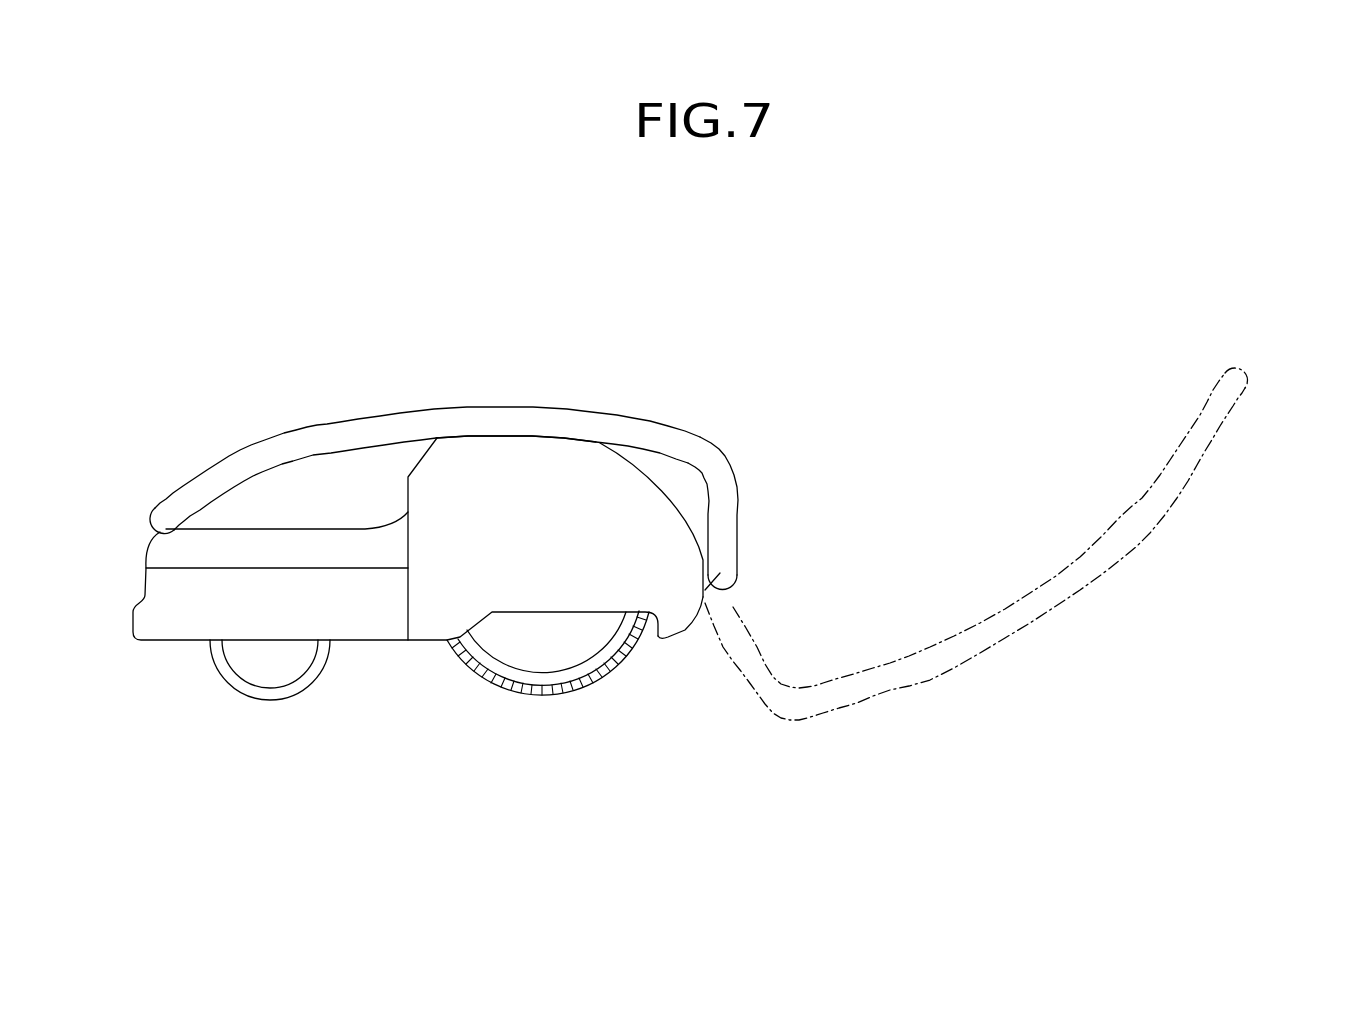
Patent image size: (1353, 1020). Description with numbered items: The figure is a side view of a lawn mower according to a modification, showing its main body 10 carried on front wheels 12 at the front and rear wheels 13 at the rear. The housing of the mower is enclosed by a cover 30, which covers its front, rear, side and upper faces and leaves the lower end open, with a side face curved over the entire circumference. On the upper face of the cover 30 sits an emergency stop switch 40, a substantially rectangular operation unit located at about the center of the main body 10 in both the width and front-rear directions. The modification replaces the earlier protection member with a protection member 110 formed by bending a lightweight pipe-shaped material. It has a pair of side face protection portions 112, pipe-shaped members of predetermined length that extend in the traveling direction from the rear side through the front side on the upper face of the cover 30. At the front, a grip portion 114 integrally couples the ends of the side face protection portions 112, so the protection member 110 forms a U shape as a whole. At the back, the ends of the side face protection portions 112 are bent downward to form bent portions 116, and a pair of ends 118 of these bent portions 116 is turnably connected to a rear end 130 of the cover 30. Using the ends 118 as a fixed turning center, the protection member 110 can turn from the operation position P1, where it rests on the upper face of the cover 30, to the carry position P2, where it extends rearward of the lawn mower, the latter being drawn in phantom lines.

The main body 10 is at (445, 544).
The front wheels 12 is at (268, 697).
The rear wheels 13 is at (575, 675).
The cover 30 is at (667, 497).
The emergency stop switch 40 is at (458, 432).
The protection member 110 is at (699, 509).
The side face protection portions 112 is at (348, 430).
The grip portion 114 is at (160, 520).
The bent portions 116 is at (723, 525).
The ends 118 is at (717, 588).
The rear end 130 is at (695, 607).
The operation position P1 is at (620, 402).
The carry position P2 is at (1108, 572).